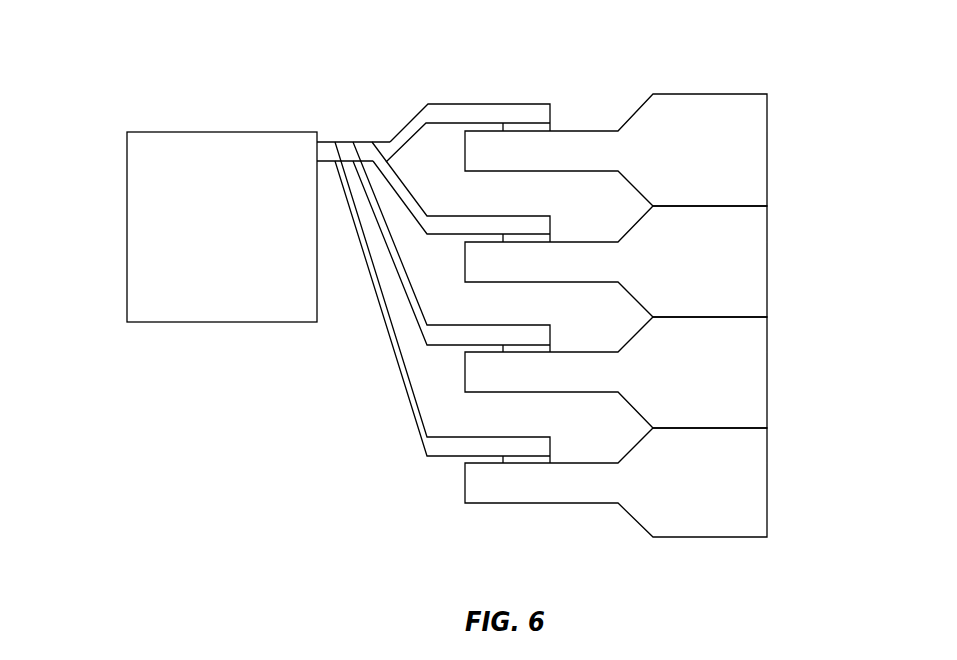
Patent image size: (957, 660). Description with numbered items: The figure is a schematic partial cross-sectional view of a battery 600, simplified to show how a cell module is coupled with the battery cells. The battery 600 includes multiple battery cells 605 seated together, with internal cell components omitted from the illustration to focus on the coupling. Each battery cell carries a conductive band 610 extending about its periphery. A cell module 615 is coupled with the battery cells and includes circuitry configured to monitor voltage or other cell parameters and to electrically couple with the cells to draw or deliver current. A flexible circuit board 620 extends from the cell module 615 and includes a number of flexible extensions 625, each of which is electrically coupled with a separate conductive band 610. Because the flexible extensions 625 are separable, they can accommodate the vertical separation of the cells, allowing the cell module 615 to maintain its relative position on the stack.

The battery 600 is at (100, 85).
The battery cells 605 is at (768, 136).
The conductive band 610 is at (552, 129).
The cell module 615 is at (127, 250).
The flexible circuit board 620 is at (363, 141).
The flexible extension 625 is at (433, 103).